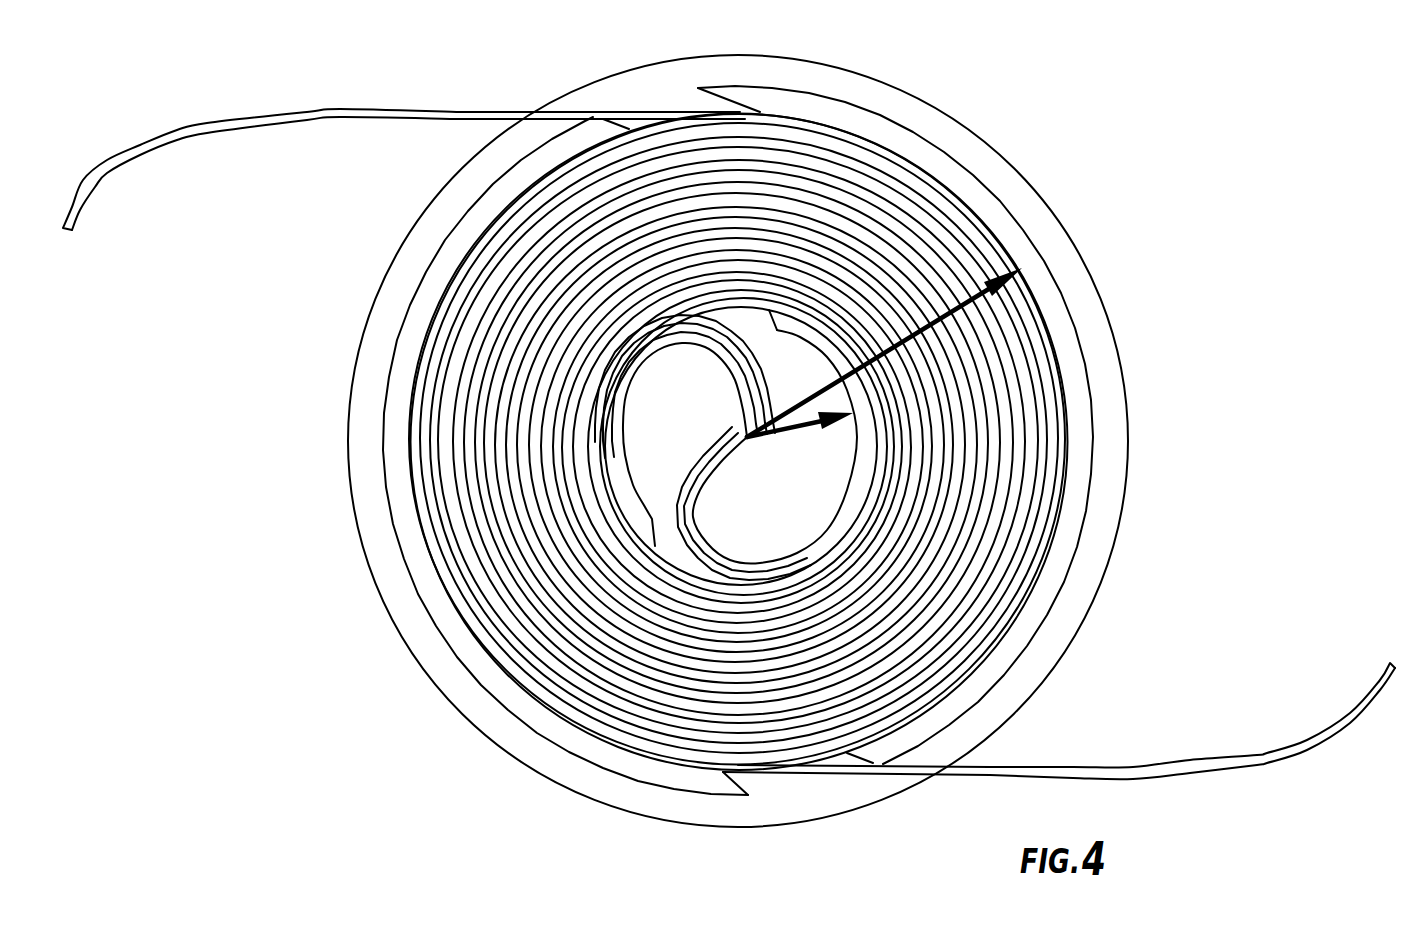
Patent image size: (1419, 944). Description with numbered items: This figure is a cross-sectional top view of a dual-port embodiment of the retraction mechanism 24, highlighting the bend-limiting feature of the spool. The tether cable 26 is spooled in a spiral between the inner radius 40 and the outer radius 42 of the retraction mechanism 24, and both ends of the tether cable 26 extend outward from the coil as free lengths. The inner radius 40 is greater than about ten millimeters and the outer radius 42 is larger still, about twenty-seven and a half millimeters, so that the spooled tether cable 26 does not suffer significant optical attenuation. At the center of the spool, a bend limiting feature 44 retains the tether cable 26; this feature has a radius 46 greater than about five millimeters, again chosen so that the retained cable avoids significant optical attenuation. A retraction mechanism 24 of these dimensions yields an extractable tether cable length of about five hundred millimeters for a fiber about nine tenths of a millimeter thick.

The retraction mechanism 24 is at (993, 143).
The tether cable 26 is at (348, 107).
The inner radius 40 is at (785, 431).
The outer radius 42 is at (797, 406).
The bend limiting feature 44 is at (697, 381).
The radius 46 is at (733, 367).